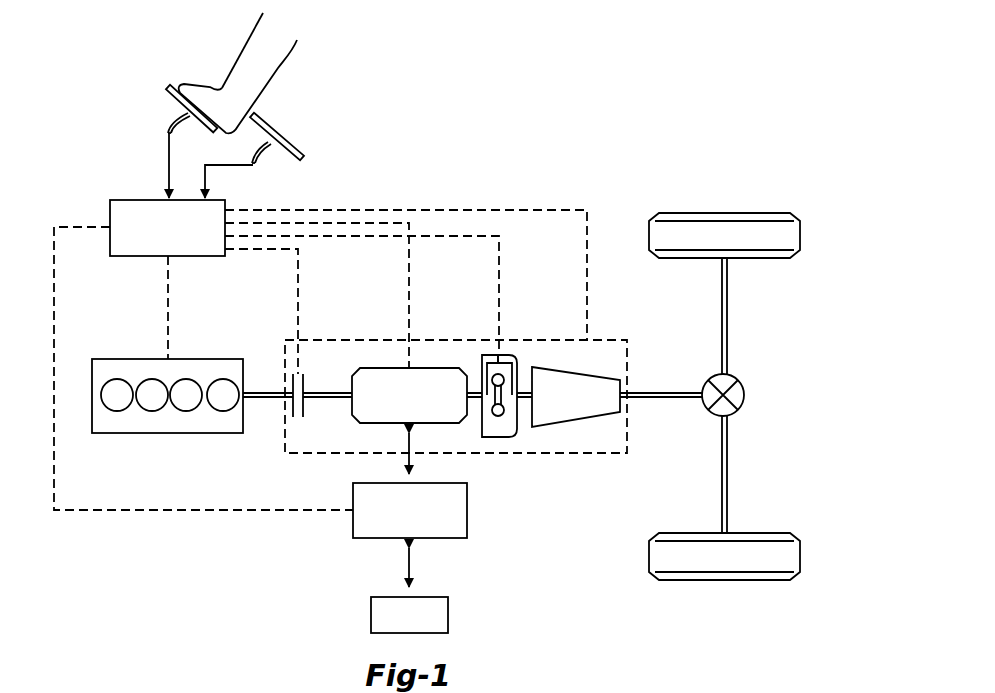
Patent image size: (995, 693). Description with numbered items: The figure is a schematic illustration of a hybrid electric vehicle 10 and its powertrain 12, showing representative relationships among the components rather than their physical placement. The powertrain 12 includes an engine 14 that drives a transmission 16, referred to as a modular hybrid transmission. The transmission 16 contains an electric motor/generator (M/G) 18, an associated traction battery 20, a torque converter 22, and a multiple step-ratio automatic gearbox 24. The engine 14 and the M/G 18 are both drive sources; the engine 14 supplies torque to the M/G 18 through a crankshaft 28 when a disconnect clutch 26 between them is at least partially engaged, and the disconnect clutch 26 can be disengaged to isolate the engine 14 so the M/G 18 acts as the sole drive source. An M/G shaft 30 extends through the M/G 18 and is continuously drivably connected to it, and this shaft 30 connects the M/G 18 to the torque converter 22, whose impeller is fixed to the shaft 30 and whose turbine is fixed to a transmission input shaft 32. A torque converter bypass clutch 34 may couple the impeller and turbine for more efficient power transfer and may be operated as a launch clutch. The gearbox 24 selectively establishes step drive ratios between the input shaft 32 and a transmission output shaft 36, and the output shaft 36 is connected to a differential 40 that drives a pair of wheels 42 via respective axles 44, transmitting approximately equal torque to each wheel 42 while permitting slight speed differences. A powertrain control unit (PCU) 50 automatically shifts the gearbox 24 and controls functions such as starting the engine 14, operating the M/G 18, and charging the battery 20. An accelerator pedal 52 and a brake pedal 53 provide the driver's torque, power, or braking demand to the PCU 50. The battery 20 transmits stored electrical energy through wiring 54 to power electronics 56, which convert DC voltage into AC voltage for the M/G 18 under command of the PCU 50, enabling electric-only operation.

The hybrid electric vehicle 10 is at (634, 150).
The powertrain 12 is at (243, 546).
The engine 14 is at (108, 358).
The transmission 16 is at (443, 336).
The electric motor/generator (M/G) 18 is at (390, 367).
The traction battery 20 is at (370, 615).
The torque converter 22 is at (497, 438).
The gearbox 24 is at (570, 428).
The disconnect clutch 26 is at (296, 415).
The crankshaft 28 is at (266, 390).
The M/G shaft 30 is at (330, 390).
The transmission input shaft 32 is at (518, 390).
The torque converter bypass clutch 34 is at (497, 355).
The transmission output shaft 36 is at (672, 390).
The differential 40 is at (744, 395).
The wheels 42 is at (724, 212).
The axles 44 is at (727, 316).
The powertrain control unit (PCU) 50 is at (118, 199).
The accelerator pedal 52 is at (167, 103).
The brake pedal 53 is at (276, 127).
The wiring 54 is at (408, 568).
The power electronics 56 is at (468, 512).